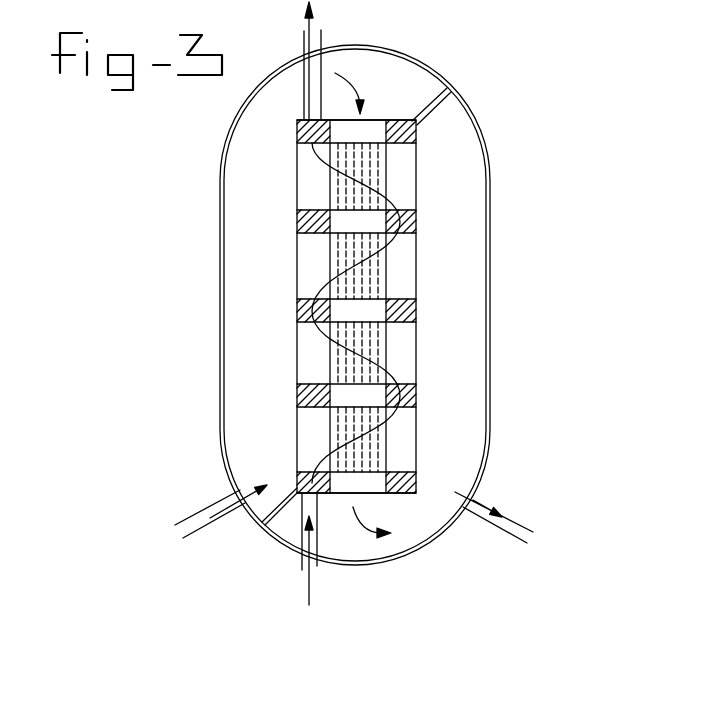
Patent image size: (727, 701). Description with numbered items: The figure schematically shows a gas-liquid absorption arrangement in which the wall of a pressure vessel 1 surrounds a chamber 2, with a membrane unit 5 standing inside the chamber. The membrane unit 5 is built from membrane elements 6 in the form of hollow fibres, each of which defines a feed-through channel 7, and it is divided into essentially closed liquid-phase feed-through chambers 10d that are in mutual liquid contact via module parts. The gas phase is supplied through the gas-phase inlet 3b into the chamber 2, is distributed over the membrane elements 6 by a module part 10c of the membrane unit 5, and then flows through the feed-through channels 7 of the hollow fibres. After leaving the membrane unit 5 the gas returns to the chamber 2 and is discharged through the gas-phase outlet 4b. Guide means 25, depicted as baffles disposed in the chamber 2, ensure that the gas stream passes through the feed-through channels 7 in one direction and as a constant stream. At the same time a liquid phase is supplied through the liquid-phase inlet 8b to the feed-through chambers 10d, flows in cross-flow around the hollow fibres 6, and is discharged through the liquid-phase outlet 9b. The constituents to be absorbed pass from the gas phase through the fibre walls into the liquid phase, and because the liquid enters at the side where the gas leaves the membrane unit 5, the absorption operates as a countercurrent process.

The pressure vessel 1 is at (489, 158).
The chamber 2 is at (453, 212).
The membrane unit 5 is at (295, 348).
The membrane element 6 is at (335, 178).
The feed-through channel 7 is at (337, 193).
The liquid-phase inlet 8b is at (318, 564).
The liquid-phase outlet 9b is at (318, 43).
The module part 10c is at (375, 130).
The liquid-phase feed-through chambers 10d is at (397, 353).
The guide means 25 is at (440, 103).
The gas-phase inlet 3b is at (196, 526).
The gas-phase outlet 4b is at (518, 528).